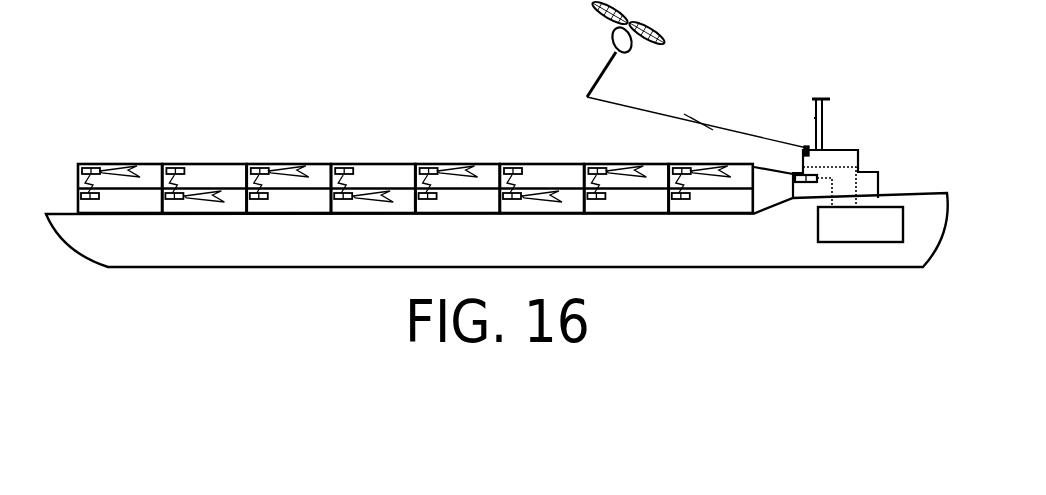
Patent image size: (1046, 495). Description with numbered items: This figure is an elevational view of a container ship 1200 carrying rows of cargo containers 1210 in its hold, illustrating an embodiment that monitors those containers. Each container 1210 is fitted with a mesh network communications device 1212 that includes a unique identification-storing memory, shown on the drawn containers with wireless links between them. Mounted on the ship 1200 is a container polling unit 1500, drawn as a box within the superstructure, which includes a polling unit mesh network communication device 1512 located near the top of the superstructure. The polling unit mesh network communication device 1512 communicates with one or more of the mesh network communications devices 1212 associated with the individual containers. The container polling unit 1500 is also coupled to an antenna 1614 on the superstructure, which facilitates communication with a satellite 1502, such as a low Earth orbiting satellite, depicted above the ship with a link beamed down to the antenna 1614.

The container ship 1200 is at (308, 268).
The cargo container 1210 is at (190, 163).
The mesh network communications device 1212 is at (181, 170).
The container polling unit 1500 is at (863, 243).
The satellite 1502 is at (612, 36).
The polling unit mesh network communication device 1512 is at (805, 183).
The antenna 1614 is at (807, 145).